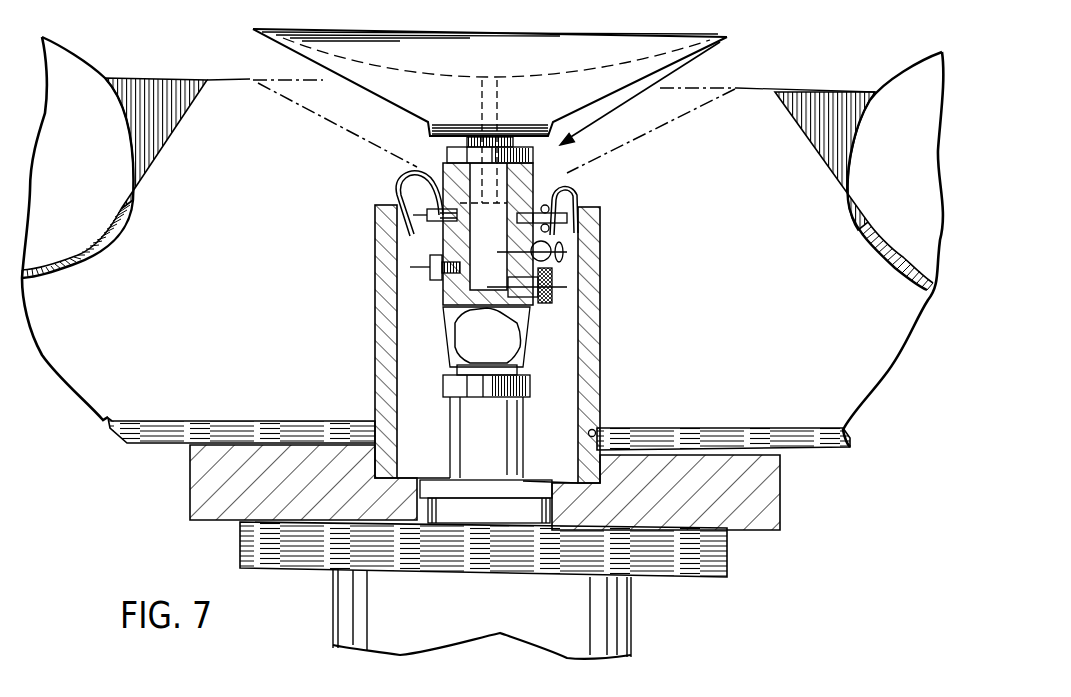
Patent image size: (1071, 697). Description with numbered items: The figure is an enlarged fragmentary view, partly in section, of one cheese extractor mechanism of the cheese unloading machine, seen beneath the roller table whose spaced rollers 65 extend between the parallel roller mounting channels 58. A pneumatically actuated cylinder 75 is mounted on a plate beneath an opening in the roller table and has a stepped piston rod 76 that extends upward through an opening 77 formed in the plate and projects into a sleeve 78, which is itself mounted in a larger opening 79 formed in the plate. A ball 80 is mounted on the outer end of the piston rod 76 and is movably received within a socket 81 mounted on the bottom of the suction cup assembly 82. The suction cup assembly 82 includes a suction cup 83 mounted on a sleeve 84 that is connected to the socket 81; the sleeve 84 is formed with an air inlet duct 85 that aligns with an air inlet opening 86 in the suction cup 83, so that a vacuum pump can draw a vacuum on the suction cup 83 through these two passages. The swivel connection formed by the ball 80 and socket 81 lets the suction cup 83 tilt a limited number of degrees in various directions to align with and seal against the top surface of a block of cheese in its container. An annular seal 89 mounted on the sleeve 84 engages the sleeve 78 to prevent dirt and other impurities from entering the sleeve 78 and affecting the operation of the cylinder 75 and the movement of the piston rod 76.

The roller mounting channel 58 is at (845, 416).
The roller 65 is at (78, 66).
The pneumatically actuated cylinder 75 is at (633, 630).
The stepped piston rod 76 is at (552, 510).
The opening 77 is at (428, 515).
The sleeve 78 is at (600, 392).
The larger opening 79 is at (595, 432).
The ball 80 is at (455, 397).
The socket 81 is at (520, 318).
The suction cup assembly 82 is at (607, 116).
The suction cup 83 is at (660, 40).
The sleeve 84 is at (586, 169).
The air inlet duct 85 is at (480, 243).
The air inlet opening 86 is at (530, 82).
The annular seal 89 is at (400, 182).